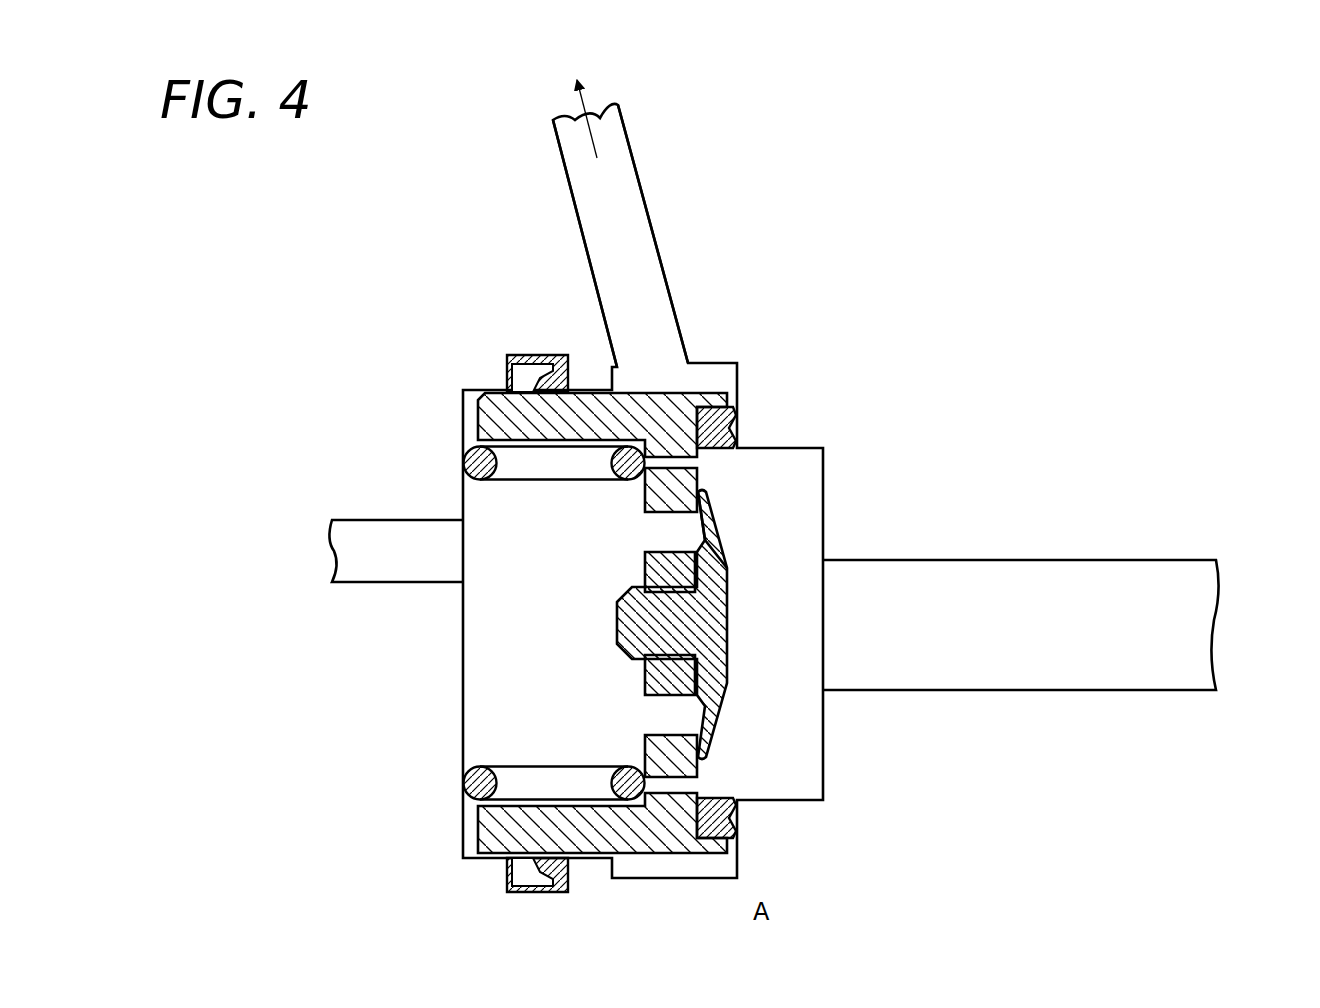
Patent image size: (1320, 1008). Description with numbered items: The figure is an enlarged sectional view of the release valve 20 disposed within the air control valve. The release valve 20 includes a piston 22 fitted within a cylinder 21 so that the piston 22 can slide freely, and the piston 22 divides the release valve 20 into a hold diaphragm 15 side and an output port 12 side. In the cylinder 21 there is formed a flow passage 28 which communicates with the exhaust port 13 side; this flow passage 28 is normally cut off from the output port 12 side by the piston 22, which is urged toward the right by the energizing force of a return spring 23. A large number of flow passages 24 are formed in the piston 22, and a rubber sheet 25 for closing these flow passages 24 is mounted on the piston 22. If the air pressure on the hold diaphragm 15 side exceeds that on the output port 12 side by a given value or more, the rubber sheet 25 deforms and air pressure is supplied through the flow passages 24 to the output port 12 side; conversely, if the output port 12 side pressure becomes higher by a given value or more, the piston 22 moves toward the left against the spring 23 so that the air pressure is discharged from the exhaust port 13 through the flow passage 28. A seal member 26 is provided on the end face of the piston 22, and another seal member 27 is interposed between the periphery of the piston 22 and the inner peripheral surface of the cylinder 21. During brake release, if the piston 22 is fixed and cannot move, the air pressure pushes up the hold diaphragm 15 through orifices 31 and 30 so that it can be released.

The output port 12 is at (1115, 621).
The exhaust port 13 is at (577, 97).
The hold diaphragm 15 is at (383, 551).
The release valve 20 is at (821, 426).
The cylinder 21 is at (490, 405).
The piston 22 is at (572, 430).
The return spring 23 is at (515, 477).
The flow passages 24 is at (652, 710).
The rubber sheet 25 is at (720, 587).
The seal member 26 is at (735, 418).
The seal member 27 is at (555, 355).
The flow passage 28 is at (660, 253).
The orifice 30 is at (697, 785).
The orifice 31 is at (697, 462).